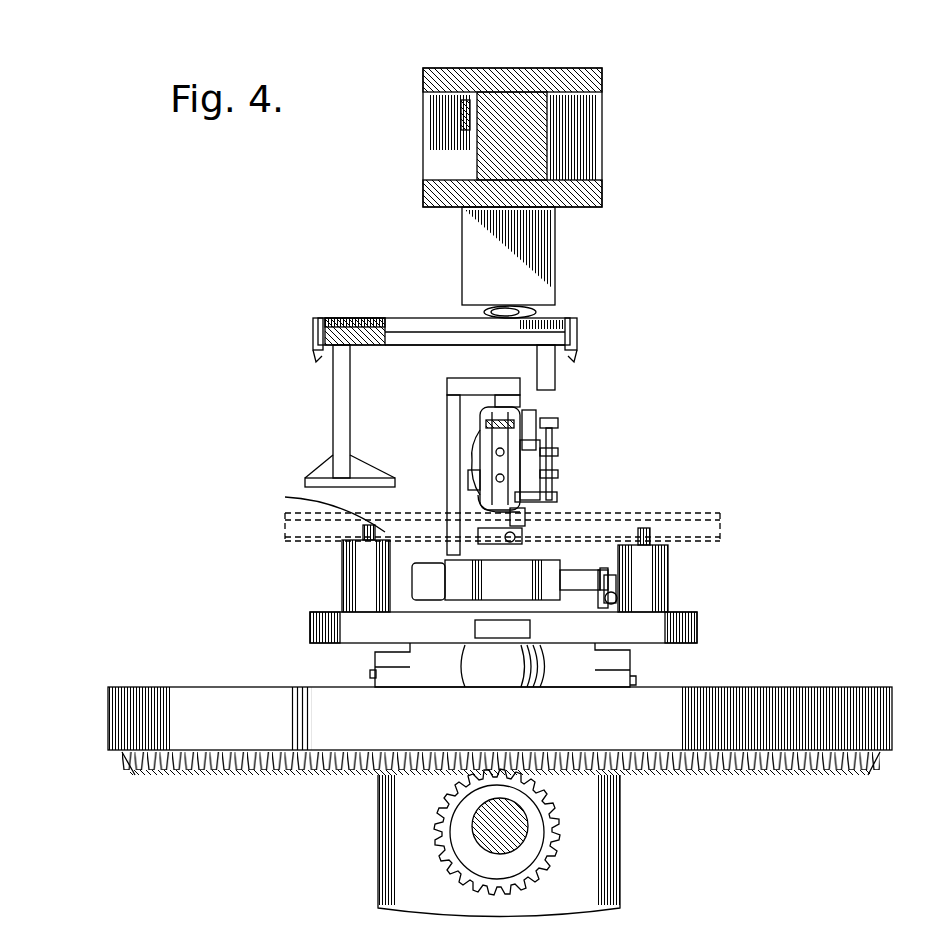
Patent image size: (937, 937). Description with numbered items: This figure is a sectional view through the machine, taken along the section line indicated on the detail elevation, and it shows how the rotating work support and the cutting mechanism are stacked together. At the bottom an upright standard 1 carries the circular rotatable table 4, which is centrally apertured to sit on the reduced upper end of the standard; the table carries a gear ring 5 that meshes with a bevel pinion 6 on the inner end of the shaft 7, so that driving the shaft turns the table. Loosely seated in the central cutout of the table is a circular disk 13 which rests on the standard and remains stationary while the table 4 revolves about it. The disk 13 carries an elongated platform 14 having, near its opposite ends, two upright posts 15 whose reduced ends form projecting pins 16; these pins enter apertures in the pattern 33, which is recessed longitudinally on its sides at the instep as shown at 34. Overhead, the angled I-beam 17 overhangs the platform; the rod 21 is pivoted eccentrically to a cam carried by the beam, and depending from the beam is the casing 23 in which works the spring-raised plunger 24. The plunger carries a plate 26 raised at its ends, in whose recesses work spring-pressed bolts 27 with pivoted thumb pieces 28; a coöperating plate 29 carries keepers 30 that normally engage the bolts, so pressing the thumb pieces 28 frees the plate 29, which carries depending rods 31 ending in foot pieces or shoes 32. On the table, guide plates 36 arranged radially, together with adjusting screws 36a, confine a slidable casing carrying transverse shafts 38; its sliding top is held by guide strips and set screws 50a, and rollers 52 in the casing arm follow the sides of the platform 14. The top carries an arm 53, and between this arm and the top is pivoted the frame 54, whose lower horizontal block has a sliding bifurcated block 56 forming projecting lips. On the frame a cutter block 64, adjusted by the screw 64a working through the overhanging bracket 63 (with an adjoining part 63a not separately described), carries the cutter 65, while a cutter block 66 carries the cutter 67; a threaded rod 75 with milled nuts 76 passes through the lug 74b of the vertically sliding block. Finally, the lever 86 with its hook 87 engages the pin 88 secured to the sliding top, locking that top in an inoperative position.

The upright standard 1 is at (430, 889).
The rotatable table 4 is at (445, 722).
The gear ring 5 is at (300, 776).
The bevel pinion 6 is at (497, 832).
The shaft 7 is at (474, 830).
The circular disk 13 is at (505, 690).
The elongated platform 14 is at (531, 630).
The upright posts 15 is at (345, 586).
The pins 16 is at (363, 527).
The angled I-beam 17 is at (575, 133).
The rod 21 is at (461, 115).
The casing 23 is at (508, 256).
The plunger 24 is at (520, 310).
The plate 26 is at (428, 318).
The bolts 27 is at (357, 310).
The thumb pieces 28 is at (313, 326).
The coöperating plate 29 is at (428, 345).
The keepers 30 is at (385, 322).
The depending rod 31 is at (333, 400).
The foot piece or shoe 32 is at (365, 478).
The pattern 33 is at (722, 540).
The recess 34 is at (321, 507).
The guide plates 36 is at (694, 678).
The adjusting screws 36a is at (370, 674).
The transverse shafts 38 is at (408, 624).
The set screws 50a is at (420, 578).
The rollers 52 is at (530, 614).
The arm 53 is at (469, 466).
The frame 54 is at (494, 404).
The sliding bifurcated block 56 is at (525, 537).
The presser foot bracket 63 is at (480, 481).
The holder arm 63a is at (484, 448).
The cutter block 64 is at (480, 468).
The adjusting screw 64a is at (538, 415).
The cutter 65 is at (490, 504).
The cutter block 66 is at (552, 501).
The cutter 67 is at (525, 519).
The parallel lug 74b is at (545, 483).
The threaded rod 75 is at (556, 432).
The milled nuts 76 is at (559, 454).
The lever 86 is at (605, 610).
The hook 87 is at (607, 583).
The pin 88 is at (612, 572).